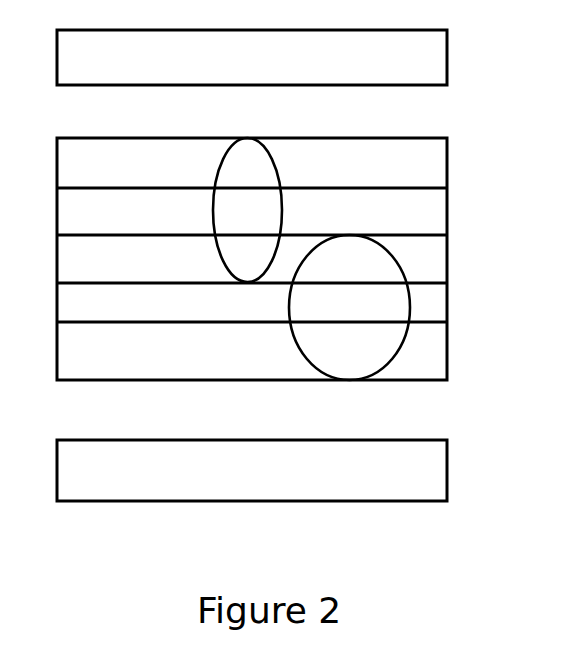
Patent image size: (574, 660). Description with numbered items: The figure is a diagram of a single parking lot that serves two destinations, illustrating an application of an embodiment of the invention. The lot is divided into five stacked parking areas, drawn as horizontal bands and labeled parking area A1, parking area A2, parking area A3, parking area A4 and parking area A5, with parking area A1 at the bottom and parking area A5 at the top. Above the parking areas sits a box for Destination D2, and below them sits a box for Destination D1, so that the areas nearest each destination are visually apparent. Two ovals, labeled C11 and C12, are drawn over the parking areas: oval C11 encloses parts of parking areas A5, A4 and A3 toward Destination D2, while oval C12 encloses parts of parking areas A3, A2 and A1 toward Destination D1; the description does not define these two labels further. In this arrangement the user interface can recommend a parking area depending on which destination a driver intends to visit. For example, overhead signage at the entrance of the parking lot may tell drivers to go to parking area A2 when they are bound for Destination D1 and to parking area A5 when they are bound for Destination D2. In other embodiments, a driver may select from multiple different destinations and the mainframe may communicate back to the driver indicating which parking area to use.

The first cluster of areas C11 is at (251, 139).
The second cluster of areas C12 is at (343, 381).
The parking area A1 is at (252, 351).
The parking area A2 is at (252, 302).
The parking area A3 is at (252, 259).
The parking area A4 is at (252, 211).
The parking area A5 is at (252, 163).
The destination D1 is at (252, 470).
The destination D2 is at (252, 57).